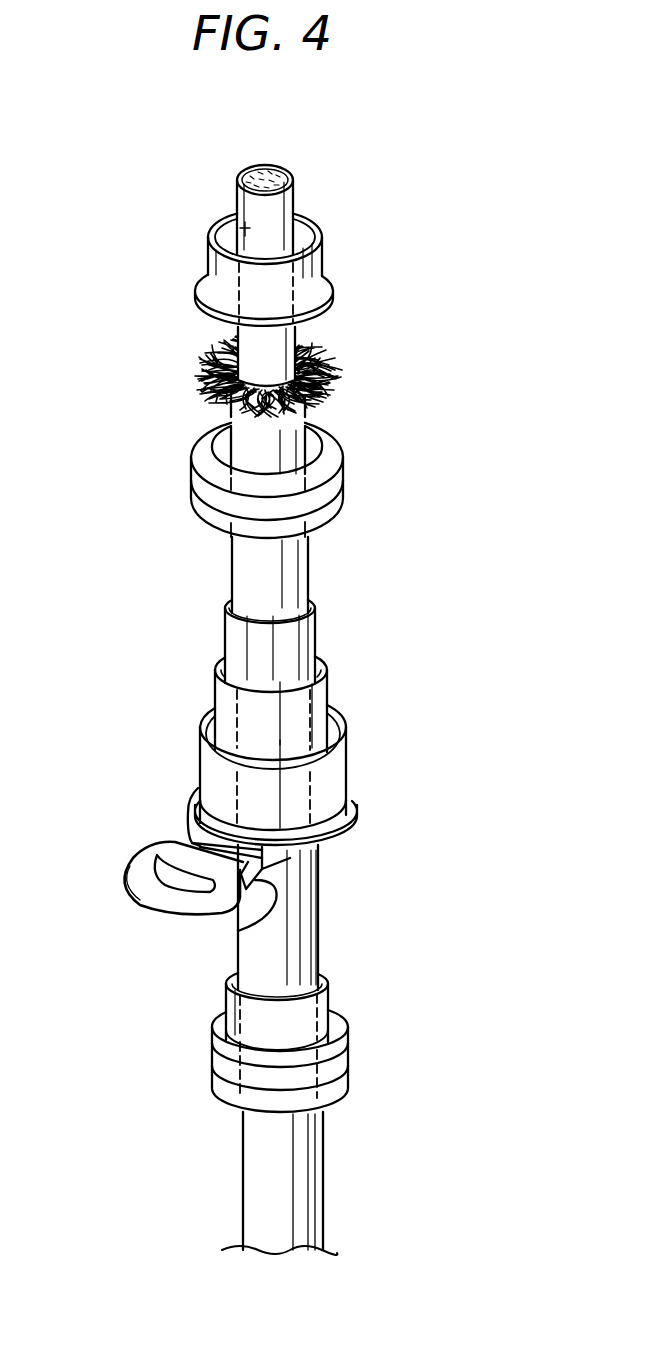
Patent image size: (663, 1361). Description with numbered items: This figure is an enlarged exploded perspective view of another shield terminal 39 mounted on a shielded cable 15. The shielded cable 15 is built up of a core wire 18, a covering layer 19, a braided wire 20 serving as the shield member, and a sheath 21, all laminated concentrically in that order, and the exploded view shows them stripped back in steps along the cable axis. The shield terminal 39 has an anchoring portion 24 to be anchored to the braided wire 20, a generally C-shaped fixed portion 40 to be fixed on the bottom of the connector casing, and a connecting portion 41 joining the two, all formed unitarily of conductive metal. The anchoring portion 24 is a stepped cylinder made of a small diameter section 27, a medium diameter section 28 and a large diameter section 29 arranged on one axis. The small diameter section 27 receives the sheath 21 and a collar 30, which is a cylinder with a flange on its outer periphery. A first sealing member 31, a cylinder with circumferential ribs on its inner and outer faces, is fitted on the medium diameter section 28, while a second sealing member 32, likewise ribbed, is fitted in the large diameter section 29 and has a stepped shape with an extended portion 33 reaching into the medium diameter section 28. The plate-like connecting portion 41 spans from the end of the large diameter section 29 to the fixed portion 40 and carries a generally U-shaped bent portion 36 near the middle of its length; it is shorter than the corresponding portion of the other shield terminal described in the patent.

The shielded cable 15 is at (316, 1163).
The core wire 18 is at (274, 166).
The covering layer 19 is at (243, 229).
The braided wire 20 is at (340, 357).
The sheath 21 is at (320, 912).
The anchoring portion 24 is at (347, 722).
The small diameter section 27 is at (318, 632).
The medium diameter section 28 is at (326, 689).
The large diameter section 29 is at (319, 775).
The collar 30 is at (323, 258).
The first sealing member 31 is at (344, 476).
The second sealing member 32 is at (348, 1050).
The extended portion 33 is at (330, 990).
The bent portion 36 is at (240, 928).
The shield terminal 39 is at (192, 815).
The fixed portion 40 is at (148, 893).
The connecting portion 41 is at (190, 827).